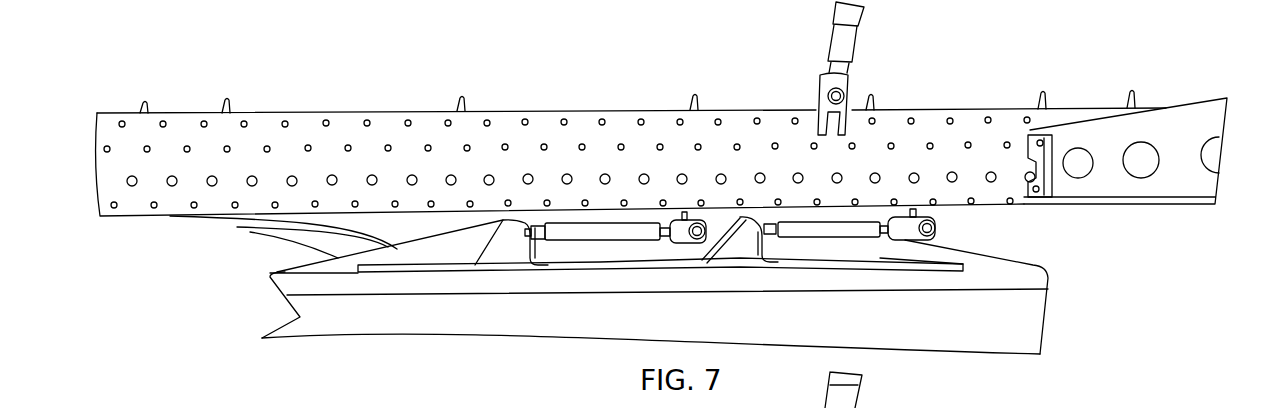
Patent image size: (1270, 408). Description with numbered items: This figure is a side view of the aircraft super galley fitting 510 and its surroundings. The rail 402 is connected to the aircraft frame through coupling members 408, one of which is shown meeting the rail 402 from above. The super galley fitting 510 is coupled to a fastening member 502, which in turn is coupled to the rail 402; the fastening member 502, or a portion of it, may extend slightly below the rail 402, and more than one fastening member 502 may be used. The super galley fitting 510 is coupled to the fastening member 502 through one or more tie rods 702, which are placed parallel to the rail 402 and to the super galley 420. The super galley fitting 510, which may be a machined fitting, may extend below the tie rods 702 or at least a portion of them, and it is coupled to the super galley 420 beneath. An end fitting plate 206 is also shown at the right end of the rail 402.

The rail 402 is at (640, 110).
The end fitting plate 206 is at (1207, 100).
The coupling member 408 is at (866, 16).
The tie rod 702 is at (586, 233).
The fastening member 502 is at (937, 222).
The super galley fitting 510 is at (625, 262).
The super galley 420 is at (1033, 316).